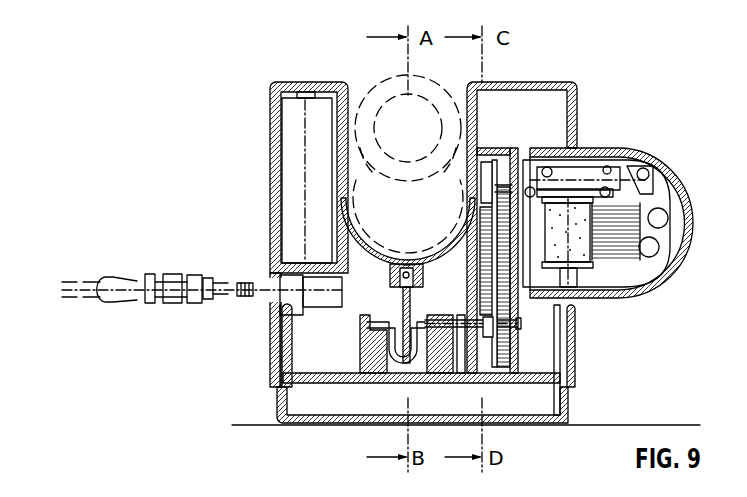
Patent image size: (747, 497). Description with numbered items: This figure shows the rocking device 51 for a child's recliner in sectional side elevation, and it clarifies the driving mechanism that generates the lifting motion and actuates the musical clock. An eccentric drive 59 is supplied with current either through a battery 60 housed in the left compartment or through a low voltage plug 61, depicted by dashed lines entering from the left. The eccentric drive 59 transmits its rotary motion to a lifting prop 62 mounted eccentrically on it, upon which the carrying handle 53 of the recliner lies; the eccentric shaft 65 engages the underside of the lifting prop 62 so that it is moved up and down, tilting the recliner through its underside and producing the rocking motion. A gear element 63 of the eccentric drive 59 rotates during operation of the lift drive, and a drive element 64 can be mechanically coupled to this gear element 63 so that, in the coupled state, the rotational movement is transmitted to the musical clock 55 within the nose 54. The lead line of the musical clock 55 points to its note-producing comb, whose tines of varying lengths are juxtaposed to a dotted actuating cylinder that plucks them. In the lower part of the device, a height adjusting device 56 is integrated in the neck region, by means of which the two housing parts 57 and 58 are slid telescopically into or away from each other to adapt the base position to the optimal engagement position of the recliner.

The rocking device 51 is at (258, 375).
The carrying handle 53 is at (418, 238).
The nose 54 is at (676, 235).
The musical clock 55 is at (634, 218).
The height adjusting device 56 is at (284, 352).
The housing part 57 is at (575, 373).
The housing part 58 is at (552, 423).
The eccentric drive 59 is at (531, 332).
The battery 60 is at (292, 128).
The low voltage plug 61 is at (131, 282).
The lifting prop 62 is at (392, 273).
The gear element 63 is at (490, 208).
The drive element 64 is at (488, 163).
The eccentric shaft 65 is at (400, 364).